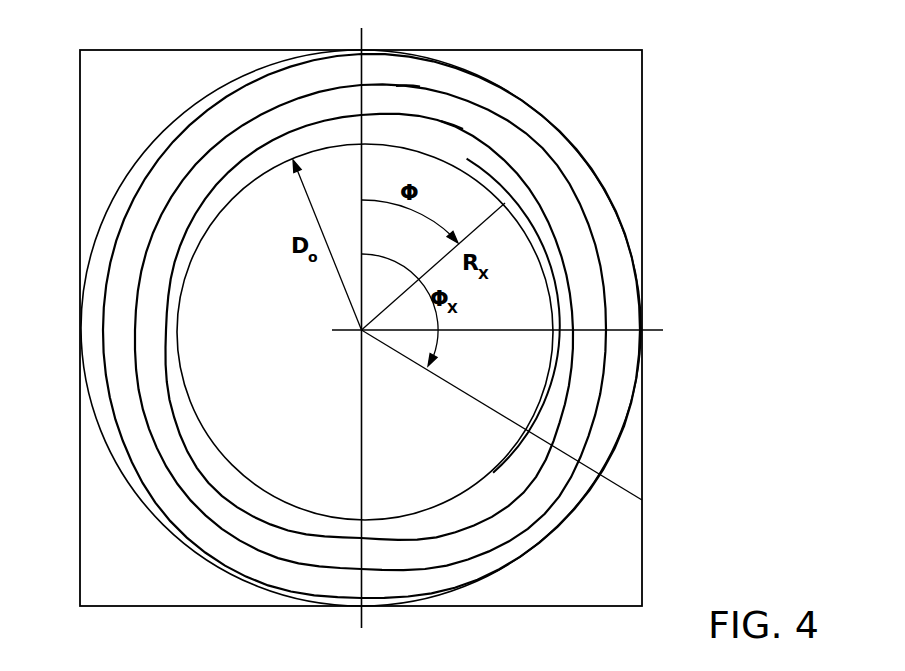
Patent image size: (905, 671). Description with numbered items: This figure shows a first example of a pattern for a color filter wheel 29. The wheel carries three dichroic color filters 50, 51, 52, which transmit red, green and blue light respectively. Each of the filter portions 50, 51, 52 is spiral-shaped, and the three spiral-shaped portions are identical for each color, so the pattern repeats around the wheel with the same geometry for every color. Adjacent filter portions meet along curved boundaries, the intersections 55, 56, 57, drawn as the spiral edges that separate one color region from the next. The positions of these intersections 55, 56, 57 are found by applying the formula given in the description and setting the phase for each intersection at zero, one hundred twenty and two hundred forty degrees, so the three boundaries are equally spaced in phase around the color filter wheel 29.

The color filter wheel 29 is at (105, 215).
The dichroic color filter 50 is at (613, 420).
The dichroic color filter 51 is at (587, 383).
The dichroic color filter 52 is at (566, 355).
The intersection 55 is at (408, 84).
The intersection 56 is at (453, 125).
The intersection 57 is at (492, 180).